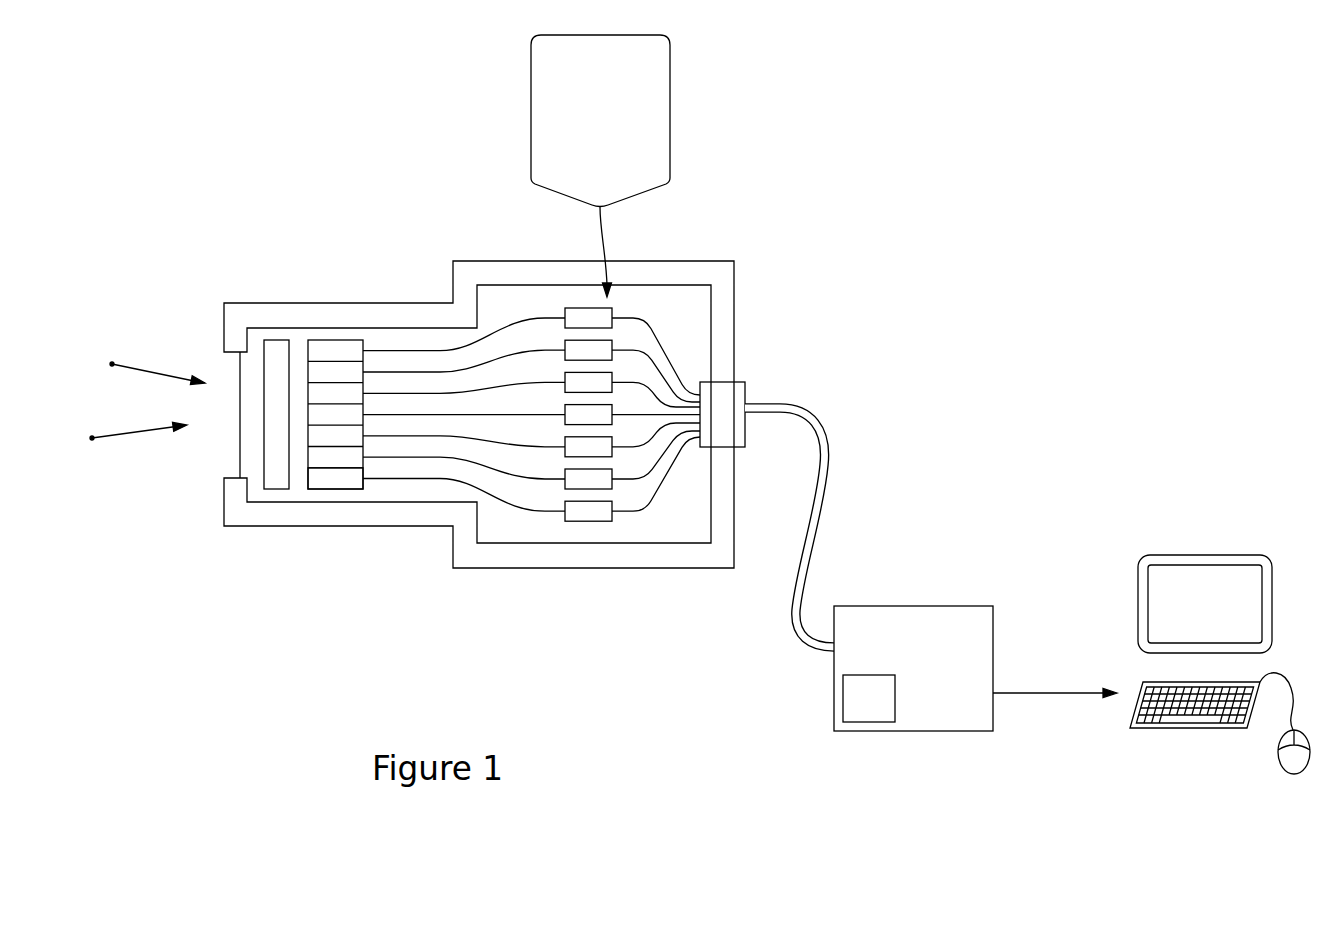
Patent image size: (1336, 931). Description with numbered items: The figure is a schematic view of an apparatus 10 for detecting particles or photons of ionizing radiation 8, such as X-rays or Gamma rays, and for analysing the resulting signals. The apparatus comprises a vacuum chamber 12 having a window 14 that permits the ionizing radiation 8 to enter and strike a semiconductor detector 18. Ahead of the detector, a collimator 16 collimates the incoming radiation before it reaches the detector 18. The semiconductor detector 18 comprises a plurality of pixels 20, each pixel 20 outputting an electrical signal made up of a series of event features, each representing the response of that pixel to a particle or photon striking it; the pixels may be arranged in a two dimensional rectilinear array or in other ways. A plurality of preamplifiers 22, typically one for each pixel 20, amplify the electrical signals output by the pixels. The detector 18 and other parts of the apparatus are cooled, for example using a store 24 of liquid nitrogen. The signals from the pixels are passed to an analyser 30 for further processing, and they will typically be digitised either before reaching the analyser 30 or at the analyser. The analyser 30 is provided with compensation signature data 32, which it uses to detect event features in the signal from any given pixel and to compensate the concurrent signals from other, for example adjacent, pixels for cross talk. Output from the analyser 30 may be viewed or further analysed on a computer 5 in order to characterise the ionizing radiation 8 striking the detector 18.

The computer 5 is at (1190, 735).
The ionizing radiation 8 is at (107, 455).
The apparatus 10 is at (887, 157).
The vacuum chamber 12 is at (307, 512).
The window 14 is at (237, 450).
The collimator 16 is at (278, 352).
The semiconductor detector 18 is at (333, 342).
The pixel 20 is at (350, 475).
The preamplifier 22 is at (602, 317).
The store of liquid nitrogen 24 is at (650, 63).
The analyser 30 is at (943, 733).
The compensation signature data 32 is at (862, 705).